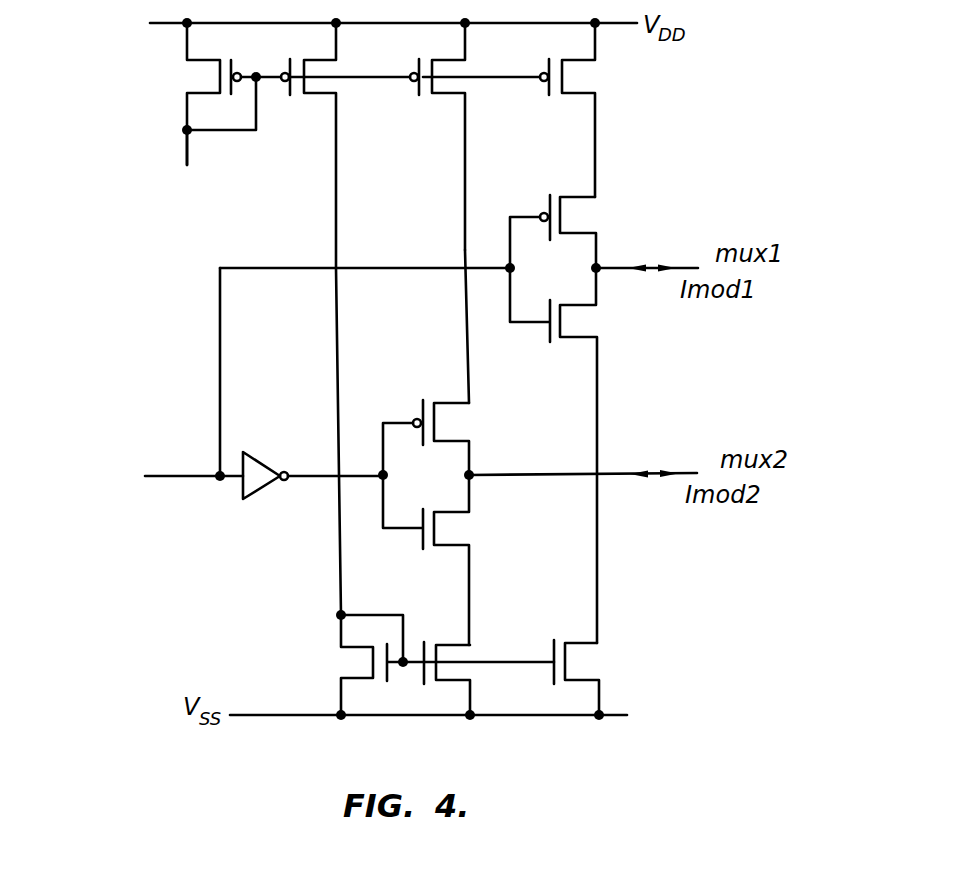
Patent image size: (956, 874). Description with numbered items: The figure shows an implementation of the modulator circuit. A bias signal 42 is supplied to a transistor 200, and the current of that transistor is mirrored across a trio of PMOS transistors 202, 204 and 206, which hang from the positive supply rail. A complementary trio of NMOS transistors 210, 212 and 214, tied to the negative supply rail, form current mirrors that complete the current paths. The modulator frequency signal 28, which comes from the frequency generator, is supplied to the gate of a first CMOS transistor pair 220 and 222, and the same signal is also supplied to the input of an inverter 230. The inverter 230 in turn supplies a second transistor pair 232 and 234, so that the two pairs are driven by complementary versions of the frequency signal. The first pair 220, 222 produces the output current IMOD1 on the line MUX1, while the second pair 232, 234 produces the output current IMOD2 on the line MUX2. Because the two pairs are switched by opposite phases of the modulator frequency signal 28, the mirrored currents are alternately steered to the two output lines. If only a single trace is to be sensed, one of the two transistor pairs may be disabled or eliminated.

The transistor 200 is at (220, 80).
The bias signal 42 is at (186, 145).
The PMOS transistor 202 is at (304, 70).
The PMOS transistor 204 is at (432, 70).
The PMOS transistor 206 is at (562, 74).
The first CMOS transistor pair transistor 220 is at (562, 224).
The first CMOS transistor pair transistor 222 is at (562, 315).
The second transistor pair transistor 232 is at (438, 430).
The second transistor pair transistor 234 is at (438, 538).
The inverter 230 is at (258, 487).
The modulator frequency signal 28 is at (192, 474).
The NMOS transistor 210 is at (373, 670).
The NMOS transistor 212 is at (440, 655).
The NMOS transistor 214 is at (568, 668).